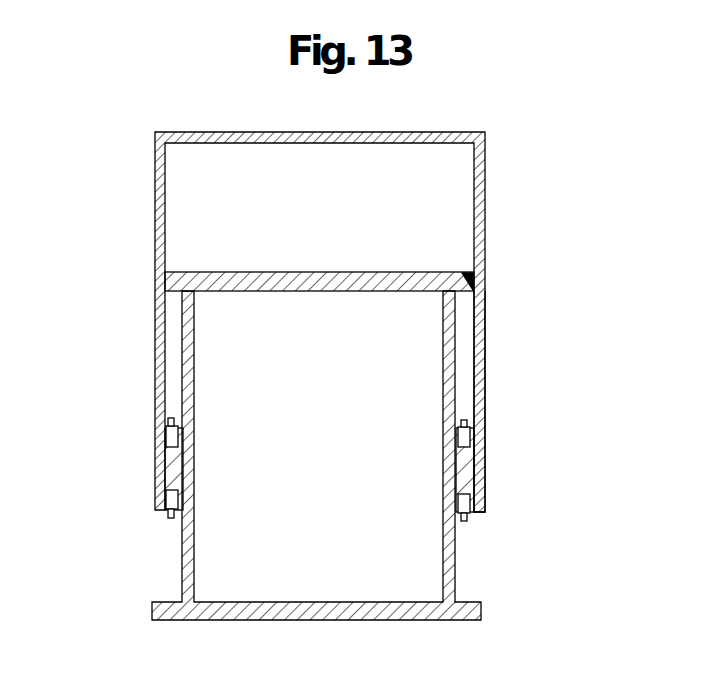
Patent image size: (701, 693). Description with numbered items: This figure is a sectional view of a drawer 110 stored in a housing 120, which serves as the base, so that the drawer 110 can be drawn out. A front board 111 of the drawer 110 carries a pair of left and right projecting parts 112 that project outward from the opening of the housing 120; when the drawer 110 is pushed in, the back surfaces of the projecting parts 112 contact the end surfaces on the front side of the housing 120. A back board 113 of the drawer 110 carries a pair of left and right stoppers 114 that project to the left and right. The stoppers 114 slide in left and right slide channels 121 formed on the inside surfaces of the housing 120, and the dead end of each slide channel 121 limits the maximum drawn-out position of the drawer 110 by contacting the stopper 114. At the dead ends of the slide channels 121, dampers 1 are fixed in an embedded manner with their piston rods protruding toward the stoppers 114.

The damper 1 is at (470, 440).
The drawer 110 is at (182, 545).
The front board 111 is at (352, 621).
The projecting part 112 is at (152, 606).
The back board 113 is at (248, 272).
The stopper 114 is at (473, 266).
The housing 120 is at (485, 173).
The slide channel 121 is at (471, 356).